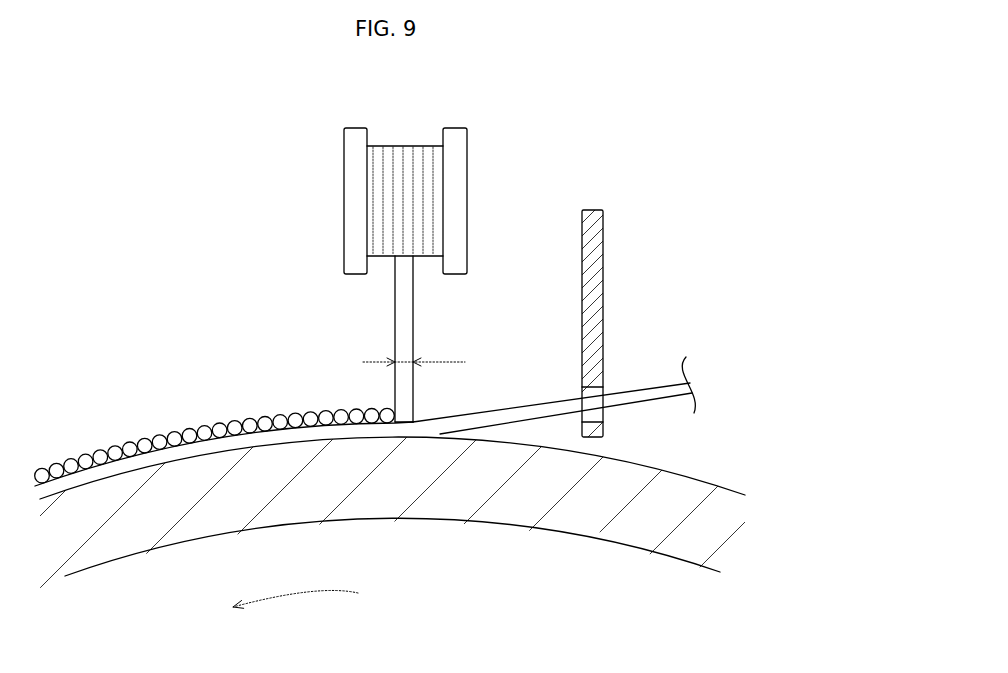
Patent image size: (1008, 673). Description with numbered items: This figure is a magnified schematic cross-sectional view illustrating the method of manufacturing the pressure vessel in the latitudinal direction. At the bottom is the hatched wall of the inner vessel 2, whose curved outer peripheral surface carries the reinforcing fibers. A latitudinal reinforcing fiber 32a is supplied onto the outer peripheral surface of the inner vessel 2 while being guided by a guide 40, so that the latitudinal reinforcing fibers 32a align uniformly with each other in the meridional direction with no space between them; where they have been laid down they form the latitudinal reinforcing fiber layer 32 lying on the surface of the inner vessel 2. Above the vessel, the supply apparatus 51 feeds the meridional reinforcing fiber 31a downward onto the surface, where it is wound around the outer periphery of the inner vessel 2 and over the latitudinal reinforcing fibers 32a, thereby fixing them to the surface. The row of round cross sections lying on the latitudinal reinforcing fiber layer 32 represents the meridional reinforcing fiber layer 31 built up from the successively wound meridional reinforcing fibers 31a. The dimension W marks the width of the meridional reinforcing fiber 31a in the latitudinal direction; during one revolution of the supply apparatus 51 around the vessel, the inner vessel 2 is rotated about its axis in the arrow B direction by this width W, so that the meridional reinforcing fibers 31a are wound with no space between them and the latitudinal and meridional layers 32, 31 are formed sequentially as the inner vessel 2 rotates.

The inner vessel 2 is at (295, 509).
The meridional reinforcing fiber layers 31 is at (212, 424).
The meridional reinforcing fibers 31a is at (394, 312).
The latitudinal reinforcing fiber layers 32 is at (133, 458).
The latitudinal reinforcing fibers 32a is at (636, 391).
The guide 40 is at (598, 266).
The supply apparatus 51 is at (458, 169).
The width W is at (414, 352).
The arrow B direction B is at (307, 594).